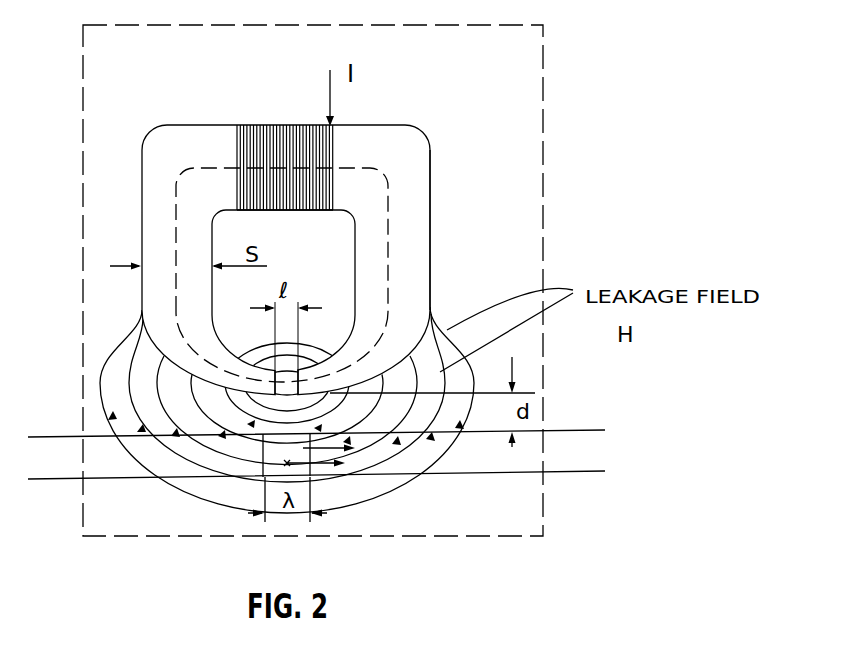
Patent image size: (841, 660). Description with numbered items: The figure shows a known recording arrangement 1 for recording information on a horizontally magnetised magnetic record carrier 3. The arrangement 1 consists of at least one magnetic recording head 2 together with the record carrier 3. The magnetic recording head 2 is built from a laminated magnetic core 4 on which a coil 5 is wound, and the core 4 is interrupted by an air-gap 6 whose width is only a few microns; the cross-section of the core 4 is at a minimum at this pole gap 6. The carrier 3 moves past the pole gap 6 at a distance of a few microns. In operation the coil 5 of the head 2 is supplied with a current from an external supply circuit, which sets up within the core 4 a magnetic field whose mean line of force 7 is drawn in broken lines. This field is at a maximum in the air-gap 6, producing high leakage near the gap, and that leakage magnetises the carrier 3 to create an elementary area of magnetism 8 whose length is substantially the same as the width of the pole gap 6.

The recording arrangement 1 is at (543, 77).
The magnetic recording head 2 is at (237, 125).
The magnetic record carrier 3 is at (563, 476).
The laminated magnetic core 4 is at (430, 172).
The coil 5 is at (307, 150).
The air-gap 6 is at (288, 374).
The mean line of force 7 is at (388, 232).
The elementary area of magnetism 8 is at (281, 478).